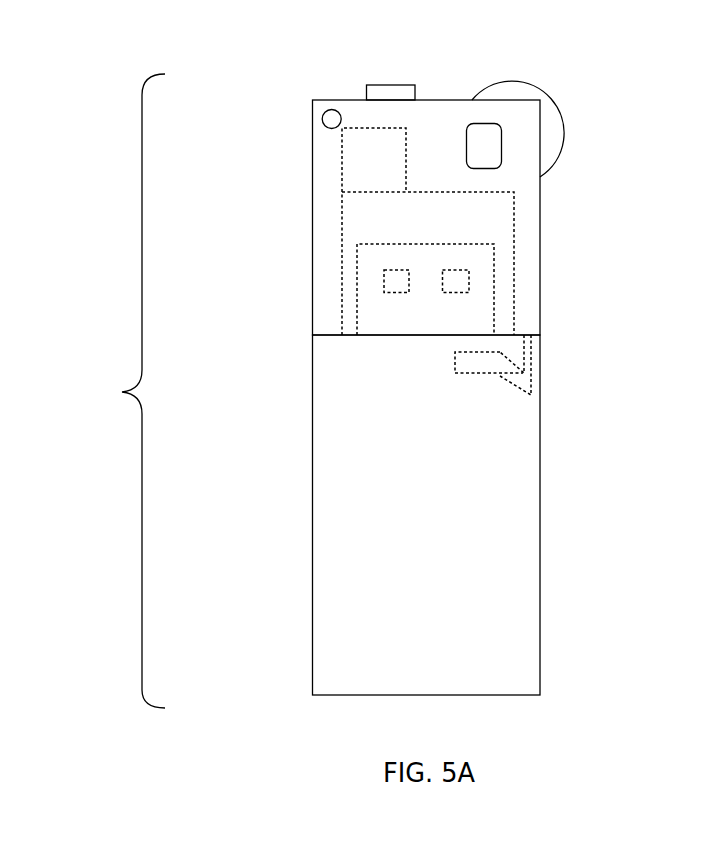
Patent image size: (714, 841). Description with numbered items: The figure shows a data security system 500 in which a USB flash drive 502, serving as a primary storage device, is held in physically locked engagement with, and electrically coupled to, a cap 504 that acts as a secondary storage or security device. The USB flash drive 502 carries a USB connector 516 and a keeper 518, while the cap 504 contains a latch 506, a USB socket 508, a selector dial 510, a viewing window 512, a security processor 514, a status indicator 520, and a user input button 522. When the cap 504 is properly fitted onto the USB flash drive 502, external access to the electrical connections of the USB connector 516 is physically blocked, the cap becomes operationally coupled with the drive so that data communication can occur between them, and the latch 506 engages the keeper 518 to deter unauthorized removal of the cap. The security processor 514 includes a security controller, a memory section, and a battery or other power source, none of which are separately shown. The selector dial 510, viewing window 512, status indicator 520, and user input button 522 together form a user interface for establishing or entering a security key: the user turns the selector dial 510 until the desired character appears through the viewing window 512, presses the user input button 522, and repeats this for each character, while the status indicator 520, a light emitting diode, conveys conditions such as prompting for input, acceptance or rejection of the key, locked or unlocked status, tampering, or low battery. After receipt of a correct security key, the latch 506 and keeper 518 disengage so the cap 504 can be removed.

The data security system 500 is at (121, 392).
The USB flash drive 502 is at (542, 602).
The cap 504 is at (313, 288).
The latch 506 is at (531, 388).
The USB socket 508 is at (515, 243).
The selector dial 510 is at (562, 140).
The viewing window 512 is at (467, 130).
The security processor 514 is at (340, 160).
The USB connector 516 is at (495, 287).
The keeper 518 is at (475, 373).
The status indicator 520 is at (332, 108).
The user input button 522 is at (390, 85).